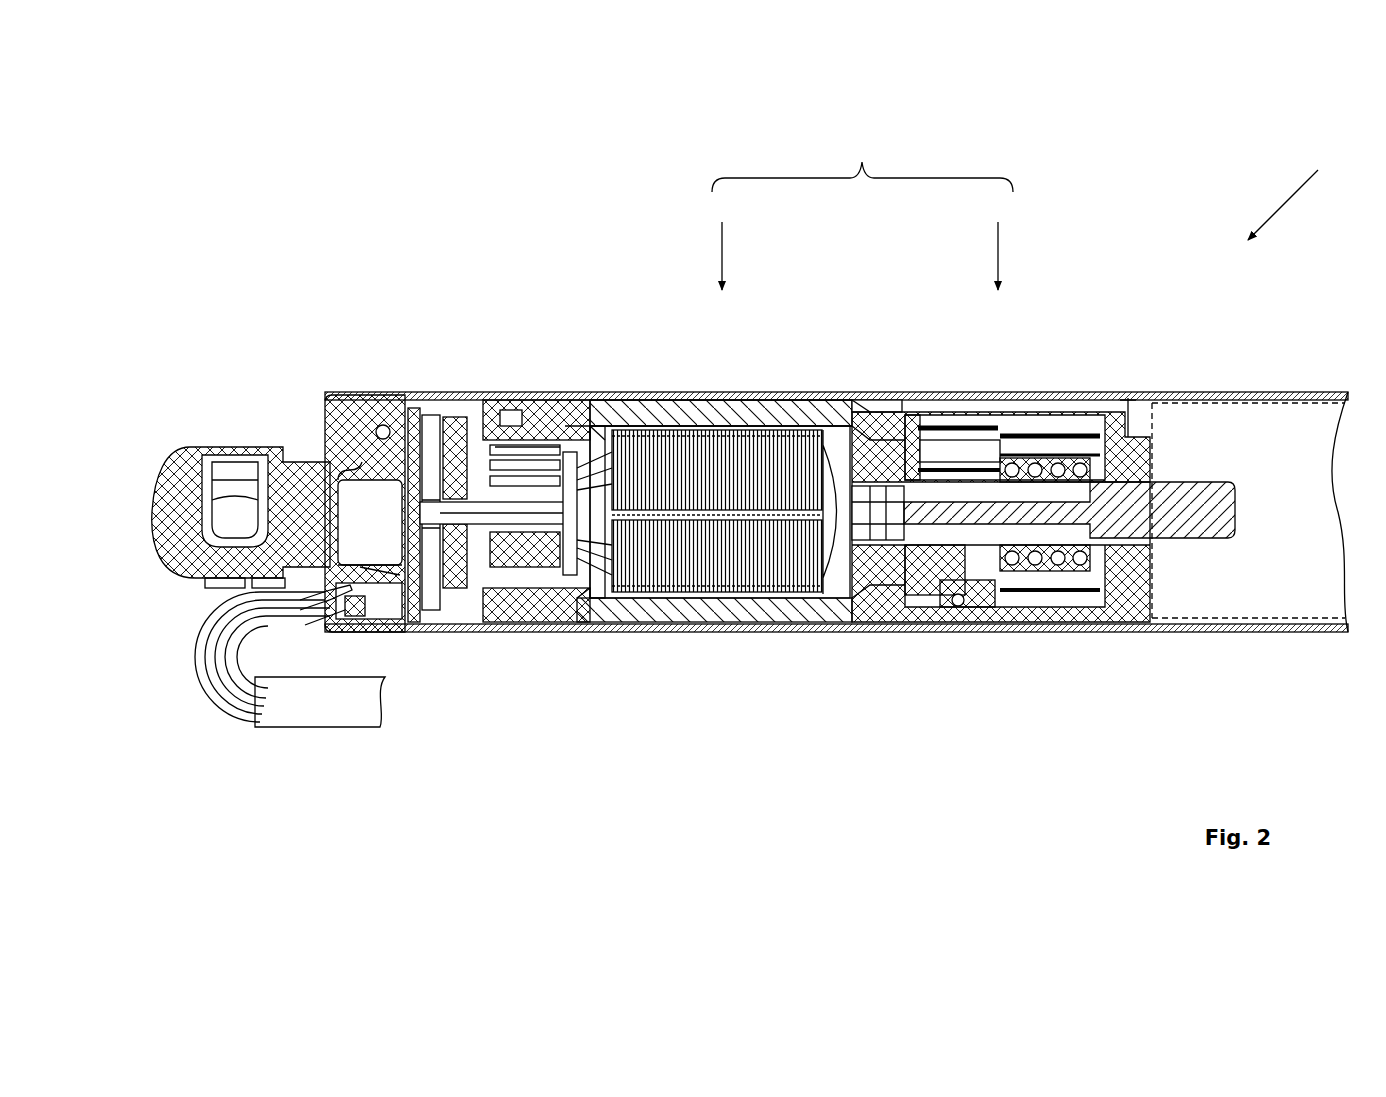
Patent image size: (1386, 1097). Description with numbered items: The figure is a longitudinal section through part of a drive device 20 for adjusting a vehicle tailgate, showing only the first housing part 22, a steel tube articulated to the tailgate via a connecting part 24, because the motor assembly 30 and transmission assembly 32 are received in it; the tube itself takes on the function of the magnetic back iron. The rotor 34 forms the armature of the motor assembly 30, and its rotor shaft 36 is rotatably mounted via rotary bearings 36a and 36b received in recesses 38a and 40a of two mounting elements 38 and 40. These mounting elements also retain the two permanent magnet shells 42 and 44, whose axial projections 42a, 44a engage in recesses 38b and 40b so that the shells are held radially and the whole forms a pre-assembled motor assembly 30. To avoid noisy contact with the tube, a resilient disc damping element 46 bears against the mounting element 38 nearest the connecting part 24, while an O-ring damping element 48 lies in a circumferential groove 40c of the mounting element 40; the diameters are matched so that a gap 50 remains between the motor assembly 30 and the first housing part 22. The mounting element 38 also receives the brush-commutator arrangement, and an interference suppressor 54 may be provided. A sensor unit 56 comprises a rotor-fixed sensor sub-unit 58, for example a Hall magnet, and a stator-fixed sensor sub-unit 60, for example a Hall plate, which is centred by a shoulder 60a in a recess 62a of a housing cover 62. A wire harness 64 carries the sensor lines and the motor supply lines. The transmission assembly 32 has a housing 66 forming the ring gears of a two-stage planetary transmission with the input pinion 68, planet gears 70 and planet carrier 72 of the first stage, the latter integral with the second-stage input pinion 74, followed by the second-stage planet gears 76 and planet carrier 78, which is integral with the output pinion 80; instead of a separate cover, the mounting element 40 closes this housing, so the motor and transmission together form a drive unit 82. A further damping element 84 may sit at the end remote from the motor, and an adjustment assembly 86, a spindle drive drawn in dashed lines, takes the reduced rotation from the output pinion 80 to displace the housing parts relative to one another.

The drive device 20 is at (1300, 193).
The first housing part 22 is at (1338, 395).
The connecting part 24 is at (178, 497).
The motor assembly 30 is at (726, 243).
The transmission assembly 32 is at (997, 243).
The rotor 34 is at (745, 450).
The rotor shaft 36 is at (443, 515).
The rotary bearing 36a is at (488, 543).
The rotary bearing 36b is at (878, 545).
The mounting element 38 is at (535, 420).
The recess 38a is at (478, 420).
The recess 38b is at (575, 418).
The mounting element 40 is at (875, 590).
The recess 40a is at (885, 460).
The recess 40b is at (860, 612).
The circumferential groove 40c is at (868, 410).
The permanent magnet shell 42 is at (710, 410).
The axial projection 42a is at (585, 430).
The permanent magnet shell 44 is at (725, 608).
The axial projection 44a is at (578, 608).
The damping element 46 is at (452, 415).
The damping element 48 is at (877, 402).
The gap 50 is at (655, 415).
The interference suppressor 54 is at (535, 517).
The sensor unit 56 is at (525, 447).
The sensor sub-unit 58 is at (440, 450).
The sensor sub-unit 60 is at (395, 420).
The shoulder 60a is at (383, 575).
The housing cover 62 is at (335, 405).
The recess 62a is at (347, 472).
The wire harness 64 is at (303, 707).
The housing 66 is at (992, 415).
The input pinion 68 is at (932, 538).
The planet gears 70 is at (958, 602).
The planet carrier 72 is at (920, 450).
The input pinion 74 is at (1035, 500).
The planet gears 76 is at (1030, 585).
The planet carrier 78 is at (1080, 420).
The output pinion 80 is at (1190, 515).
The drive unit 82 is at (862, 162).
The damping element 84 is at (1125, 410).
The adjustment assembly 86 is at (1283, 602).